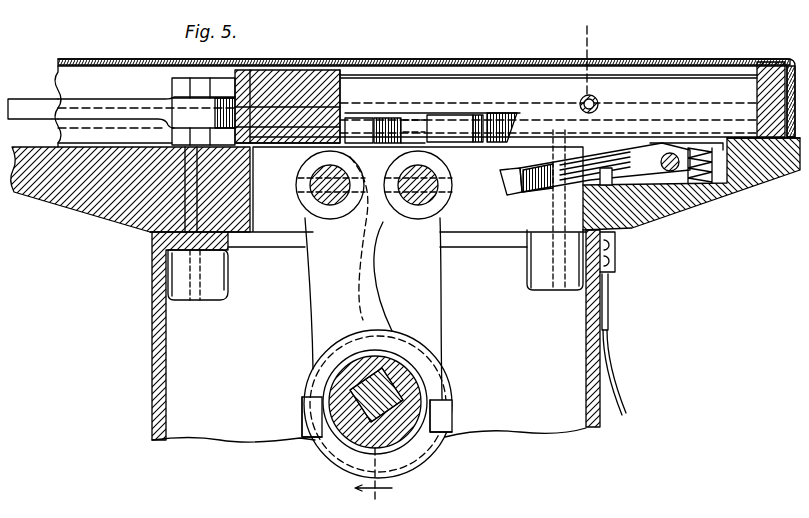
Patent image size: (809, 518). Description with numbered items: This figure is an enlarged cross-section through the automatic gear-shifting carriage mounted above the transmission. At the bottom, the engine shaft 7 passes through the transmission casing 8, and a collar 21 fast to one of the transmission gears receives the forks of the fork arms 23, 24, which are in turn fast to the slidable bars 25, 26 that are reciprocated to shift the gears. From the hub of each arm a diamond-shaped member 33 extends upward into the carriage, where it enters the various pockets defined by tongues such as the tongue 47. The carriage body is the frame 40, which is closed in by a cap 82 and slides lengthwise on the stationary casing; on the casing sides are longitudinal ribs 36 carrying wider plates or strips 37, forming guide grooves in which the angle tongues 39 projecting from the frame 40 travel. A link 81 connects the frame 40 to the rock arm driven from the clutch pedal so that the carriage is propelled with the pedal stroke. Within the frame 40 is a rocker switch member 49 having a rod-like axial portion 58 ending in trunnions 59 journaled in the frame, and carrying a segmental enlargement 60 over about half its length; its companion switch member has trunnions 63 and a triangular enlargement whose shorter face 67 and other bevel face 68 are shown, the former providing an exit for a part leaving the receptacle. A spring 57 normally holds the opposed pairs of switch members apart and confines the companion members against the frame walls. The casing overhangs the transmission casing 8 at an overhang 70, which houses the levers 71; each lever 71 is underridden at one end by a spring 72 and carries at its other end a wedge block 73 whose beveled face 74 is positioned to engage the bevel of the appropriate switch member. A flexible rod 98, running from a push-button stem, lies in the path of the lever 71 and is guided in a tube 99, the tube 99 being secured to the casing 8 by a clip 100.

The cap 82 is at (108, 60).
The rod-like axial portion 58 is at (416, 84).
The link 81 is at (28, 105).
The longitudinal rib 36 is at (124, 108).
The plate or strip 37 is at (74, 108).
The trunnion 59 is at (331, 69).
The frame 40 is at (341, 70).
The member 33 is at (432, 128).
The bevel face 68 is at (455, 128).
The tongue 47 is at (418, 122).
The face 67 is at (505, 114).
The spring 57 is at (599, 105).
The rocker switch member 49 is at (697, 86).
The segmental enlargement 60 is at (654, 314).
The engine shaft 7 is at (420, 394).
The transmission casing 8 is at (152, 379).
The slidable bar 26 is at (318, 192).
The slidable bar 25 is at (432, 178).
The fork arm 23 is at (327, 293).
The fork arm 24 is at (423, 311).
The collar 21 is at (410, 446).
The wedge block 73 is at (510, 188).
The beveled face 74 is at (540, 182).
The lever 71 is at (640, 226).
The spring 72 is at (702, 200).
The overhang 70 is at (758, 186).
The clip 100 is at (616, 266).
The tube 99 is at (609, 300).
The flexible rod 98 is at (621, 366).
The trunnion 63 is at (330, 510).
The angle tongue 39 is at (695, 510).